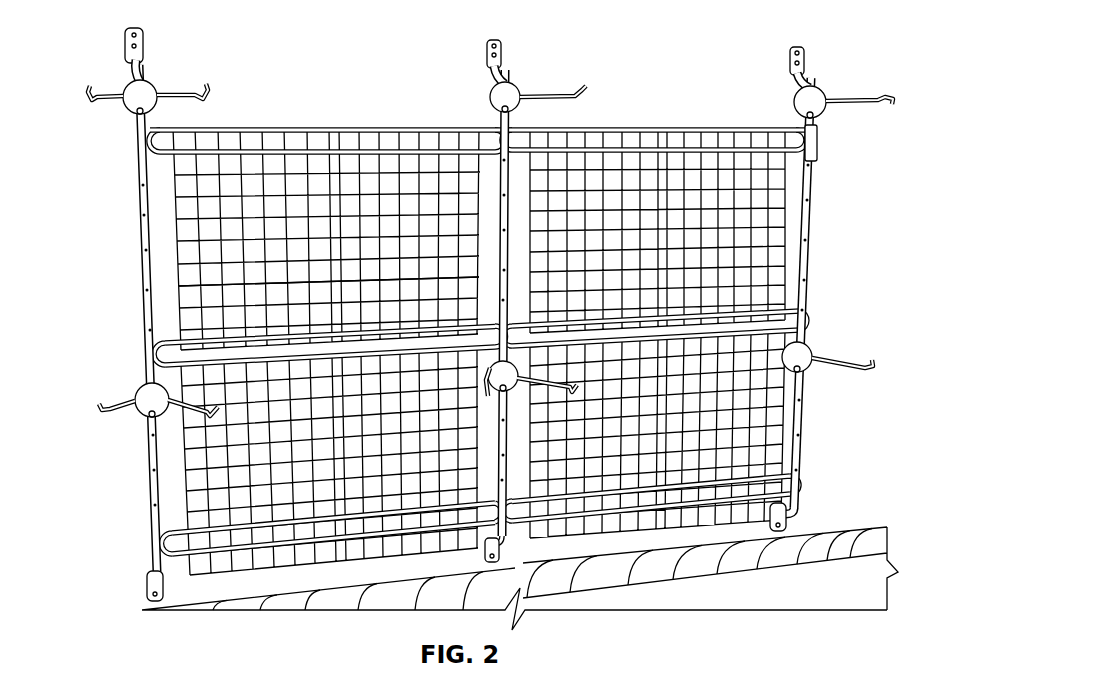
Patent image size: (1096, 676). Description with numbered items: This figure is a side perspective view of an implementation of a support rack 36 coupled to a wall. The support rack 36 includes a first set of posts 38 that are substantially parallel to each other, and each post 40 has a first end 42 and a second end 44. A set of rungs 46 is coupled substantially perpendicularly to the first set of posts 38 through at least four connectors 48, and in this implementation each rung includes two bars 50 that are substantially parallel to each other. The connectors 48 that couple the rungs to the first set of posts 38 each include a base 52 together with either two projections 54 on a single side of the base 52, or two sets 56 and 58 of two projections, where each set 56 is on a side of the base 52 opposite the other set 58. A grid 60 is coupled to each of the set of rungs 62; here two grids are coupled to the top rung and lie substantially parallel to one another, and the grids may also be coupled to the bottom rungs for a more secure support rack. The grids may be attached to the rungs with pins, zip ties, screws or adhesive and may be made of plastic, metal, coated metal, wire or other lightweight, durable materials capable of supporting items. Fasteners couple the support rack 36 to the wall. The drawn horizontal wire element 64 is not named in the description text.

The support rack 36 is at (466, 301).
The first set of posts 38 is at (696, 289).
The post 40 is at (812, 236).
The first end 42 is at (798, 462).
The second end 44 is at (815, 160).
The set of rungs 46 is at (732, 128).
The connectors 48 is at (805, 322).
The bars 50 is at (660, 128).
The base 52 is at (140, 143).
The projections 54 is at (160, 130).
The set of two projections 56 is at (484, 150).
The set of two projections 58 is at (516, 128).
The grid 60 is at (195, 254).
The set of rungs 62 is at (302, 128).
The horizontal mesh wire 64 is at (348, 268).